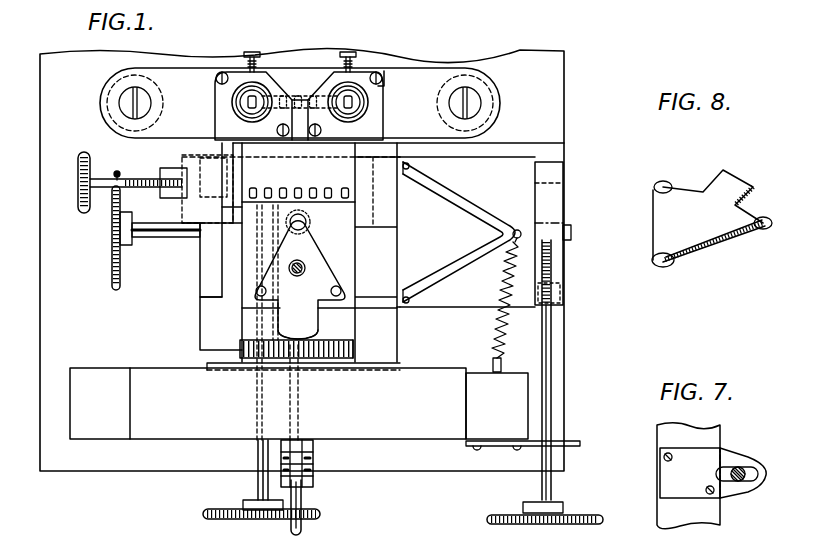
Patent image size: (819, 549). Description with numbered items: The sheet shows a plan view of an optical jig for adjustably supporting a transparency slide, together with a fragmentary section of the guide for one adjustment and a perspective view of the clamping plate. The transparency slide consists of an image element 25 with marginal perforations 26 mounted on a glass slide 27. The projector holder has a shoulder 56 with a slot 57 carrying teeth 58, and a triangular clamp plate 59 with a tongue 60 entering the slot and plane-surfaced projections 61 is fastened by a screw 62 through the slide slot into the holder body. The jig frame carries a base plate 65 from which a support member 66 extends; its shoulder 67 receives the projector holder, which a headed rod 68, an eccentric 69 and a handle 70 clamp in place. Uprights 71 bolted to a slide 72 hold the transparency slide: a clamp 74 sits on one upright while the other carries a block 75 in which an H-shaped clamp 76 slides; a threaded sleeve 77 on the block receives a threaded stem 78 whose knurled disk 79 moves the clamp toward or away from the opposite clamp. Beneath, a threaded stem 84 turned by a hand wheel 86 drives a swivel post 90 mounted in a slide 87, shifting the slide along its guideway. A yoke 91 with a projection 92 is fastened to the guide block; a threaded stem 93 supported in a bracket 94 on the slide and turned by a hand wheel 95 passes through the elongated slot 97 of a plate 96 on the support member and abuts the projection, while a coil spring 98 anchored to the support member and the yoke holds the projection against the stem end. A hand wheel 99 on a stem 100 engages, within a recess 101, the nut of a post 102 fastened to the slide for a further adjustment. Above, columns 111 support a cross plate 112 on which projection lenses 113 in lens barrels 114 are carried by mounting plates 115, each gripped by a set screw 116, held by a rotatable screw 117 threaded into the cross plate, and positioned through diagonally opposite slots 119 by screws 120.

In FIG. 1, the image element 25 is at (298, 180).
In FIG. 1, the perforations 26 is at (348, 194).
In FIG. 1, the glass slide 27 is at (248, 284).
In FIG. 1, the shoulder 56 is at (358, 360).
In FIG. 1, the slot 57 is at (356, 343).
In FIG. 1, the teeth 58 is at (258, 360).
In FIG. 1, the clamp plate 59 is at (320, 264).
In FIG. 8, the clamp plate 59 is at (652, 232).
In FIG. 1, the tongue 60 is at (298, 325).
In FIG. 8, the tongue 60 is at (716, 183).
In FIG. 1, the projections 61 is at (305, 222).
In FIG. 8, the projections 61 is at (662, 180).
In FIG. 1, the screw 62 is at (308, 270).
In FIG. 1, the base plate 65 is at (94, 466).
In FIG. 1, the support member 66 is at (367, 440).
In FIG. 7, the support member 66 is at (658, 434).
In FIG. 1, the shoulder 67 is at (207, 364).
In FIG. 1, the headed rod 68 is at (300, 412).
In FIG. 1, the eccentric 69 is at (312, 455).
In FIG. 1, the handle 70 is at (305, 502).
In FIG. 1, the uprights 71 is at (202, 272).
In FIG. 1, the slide 72 is at (200, 300).
In FIG. 1, the clamp 74 is at (398, 203).
In FIG. 1, the block 75 is at (188, 216).
In FIG. 1, the H-shaped clamp 76 is at (240, 214).
In FIG. 1, the threaded sleeve 77 is at (176, 170).
In FIG. 1, the threaded stem 78 is at (133, 178).
In FIG. 1, the knurled disk 79 is at (78, 166).
In FIG. 1, the threaded stem 84 is at (148, 238).
In FIG. 1, the hand wheel 86 is at (112, 258).
In FIG. 1, the slide 87 is at (508, 152).
In FIG. 1, the swivel post 90 is at (287, 261).
In FIG. 1, the yoke 91 is at (462, 203).
In FIG. 1, the projection 92 is at (568, 224).
In FIG. 1, the threaded stem 93 is at (555, 320).
In FIG. 7, the threaded stem 93 is at (741, 481).
In FIG. 1, the bracket 94 is at (553, 192).
In FIG. 1, the hand wheel 95 is at (528, 522).
In FIG. 1, the plate 96 is at (570, 441).
In FIG. 7, the plate 96 is at (718, 462).
In FIG. 7, the elongated slot 97 is at (750, 466).
In FIG. 1, the coil spring 98 is at (496, 330).
In FIG. 1, the hand wheel 99 is at (214, 510).
In FIG. 1, the stem 100 is at (256, 492).
In FIG. 1, the recess 101 is at (268, 291).
In FIG. 1, the post 102 is at (262, 218).
In FIG. 1, the columns 111 is at (106, 90).
In FIG. 1, the cross plate 112 is at (430, 70).
In FIG. 1, the projection lenses 113 is at (240, 56).
In FIG. 1, the lens barrels 114 is at (235, 108).
In FIG. 1, the mounting plates 115 is at (222, 94).
In FIG. 1, the set screw 116 is at (256, 50).
In FIG. 1, the screw 117 is at (312, 138).
In FIG. 1, the slots 119 is at (386, 76).
In FIG. 1, the screws 120 is at (220, 70).